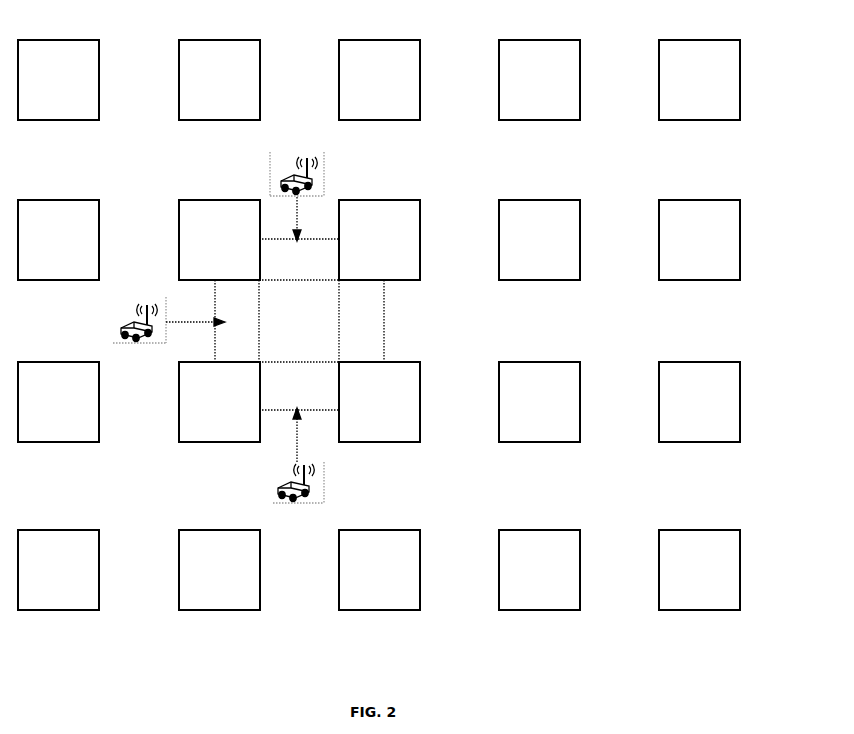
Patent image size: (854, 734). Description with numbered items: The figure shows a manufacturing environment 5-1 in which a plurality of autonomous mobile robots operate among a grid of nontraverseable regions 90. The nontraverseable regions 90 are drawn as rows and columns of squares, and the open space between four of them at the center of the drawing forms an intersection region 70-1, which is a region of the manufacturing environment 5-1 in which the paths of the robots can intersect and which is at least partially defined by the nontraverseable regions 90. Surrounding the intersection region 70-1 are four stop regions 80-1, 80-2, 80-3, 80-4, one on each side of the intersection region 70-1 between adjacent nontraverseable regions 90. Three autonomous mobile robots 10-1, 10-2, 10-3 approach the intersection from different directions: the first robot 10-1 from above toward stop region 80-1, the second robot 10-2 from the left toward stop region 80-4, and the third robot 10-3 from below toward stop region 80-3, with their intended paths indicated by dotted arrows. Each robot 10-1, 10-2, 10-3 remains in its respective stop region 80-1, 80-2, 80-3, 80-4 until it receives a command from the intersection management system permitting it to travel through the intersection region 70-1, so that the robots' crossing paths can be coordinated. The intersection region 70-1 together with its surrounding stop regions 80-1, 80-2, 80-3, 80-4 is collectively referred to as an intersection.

The manufacturing environment 5-1 is at (789, 107).
The nontraverseable regions 90 is at (260, 52).
The intersection region 70-1 is at (339, 322).
The stop region 80-1 is at (315, 238).
The stop region 80-2 is at (384, 342).
The stop region 80-3 is at (325, 410).
The stop region 80-4 is at (215, 287).
The autonomous mobile robot 10-1 is at (307, 162).
The autonomous mobile robot 10-2 is at (148, 318).
The autonomous mobile robot 10-3 is at (308, 488).